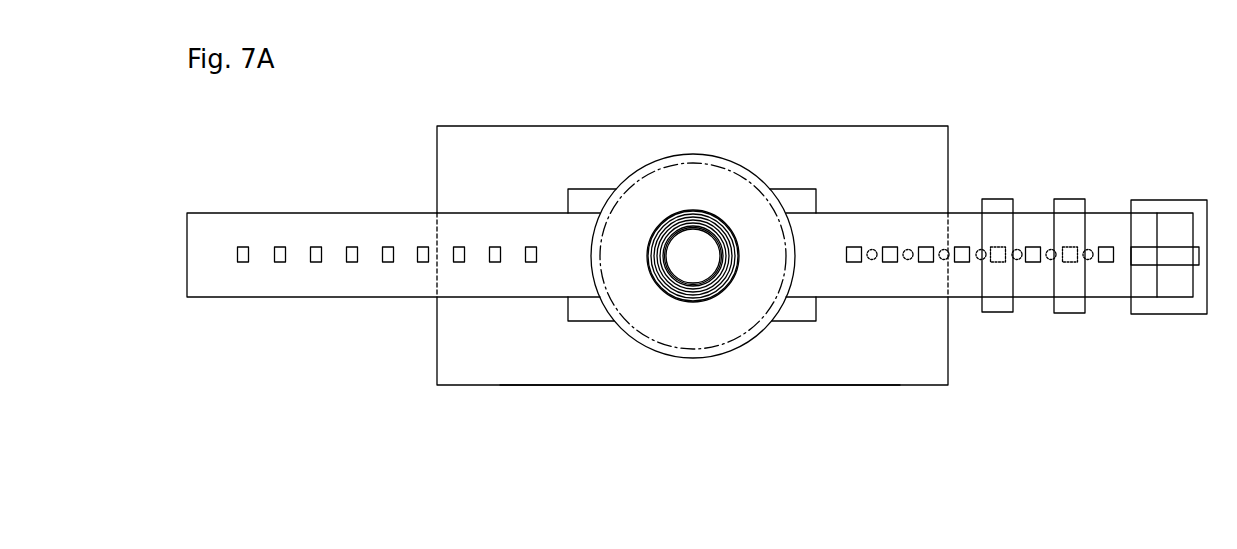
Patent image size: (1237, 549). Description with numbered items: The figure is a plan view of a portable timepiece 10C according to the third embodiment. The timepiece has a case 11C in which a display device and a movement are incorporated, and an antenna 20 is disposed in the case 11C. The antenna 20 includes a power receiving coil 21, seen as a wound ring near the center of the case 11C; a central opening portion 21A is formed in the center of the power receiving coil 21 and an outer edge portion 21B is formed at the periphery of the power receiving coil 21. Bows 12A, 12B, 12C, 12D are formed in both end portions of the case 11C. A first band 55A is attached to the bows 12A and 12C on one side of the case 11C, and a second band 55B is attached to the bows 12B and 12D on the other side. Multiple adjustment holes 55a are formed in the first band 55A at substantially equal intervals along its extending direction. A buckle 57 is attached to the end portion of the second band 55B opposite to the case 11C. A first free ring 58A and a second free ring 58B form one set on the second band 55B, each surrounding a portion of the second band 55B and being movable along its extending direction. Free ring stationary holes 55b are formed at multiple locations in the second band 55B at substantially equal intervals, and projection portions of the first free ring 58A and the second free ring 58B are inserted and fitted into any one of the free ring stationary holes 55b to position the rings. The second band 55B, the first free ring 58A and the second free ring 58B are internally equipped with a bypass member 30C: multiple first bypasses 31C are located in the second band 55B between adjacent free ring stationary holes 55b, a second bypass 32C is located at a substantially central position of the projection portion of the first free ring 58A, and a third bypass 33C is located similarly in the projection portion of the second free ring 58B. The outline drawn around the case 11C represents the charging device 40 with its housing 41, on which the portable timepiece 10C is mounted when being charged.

The portable timepiece 10C is at (777, 142).
The case 11C is at (698, 172).
The bow 12A is at (580, 310).
The bow 12B is at (802, 310).
The bow 12C is at (585, 200).
The bow 12D is at (805, 202).
The antenna 20 is at (686, 325).
The power receiving coil 21 is at (719, 290).
The central opening portion 21A is at (688, 256).
The outer edge portion 21B is at (723, 225).
The bypass member 30C is at (1019, 191).
The first bypass 31C is at (945, 248).
The second bypass 32C is at (998, 262).
The third bypass 33C is at (1070, 247).
The charging device 40 is at (933, 392).
The housing 41 is at (768, 375).
The first band 55A is at (332, 228).
The second band 55B is at (1115, 213).
The adjustment hole 55a is at (243, 262).
The free ring stationary hole 55b is at (854, 262).
The buckle 57 is at (1195, 207).
The first free ring 58A is at (1000, 199).
The second free ring 58B is at (1072, 198).